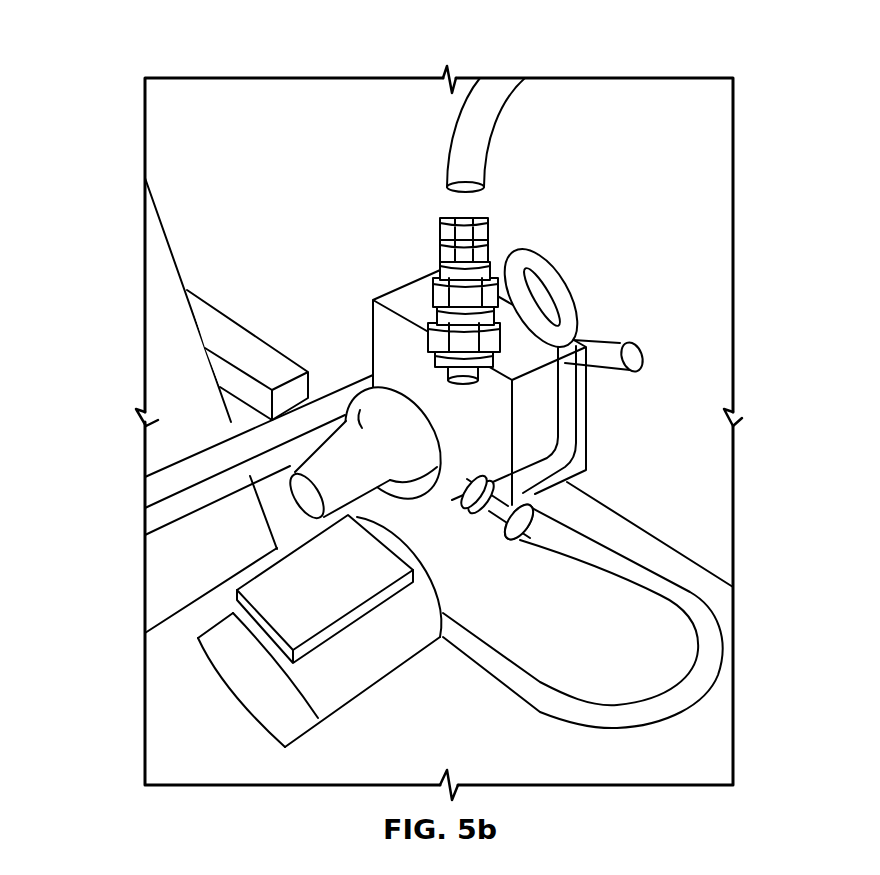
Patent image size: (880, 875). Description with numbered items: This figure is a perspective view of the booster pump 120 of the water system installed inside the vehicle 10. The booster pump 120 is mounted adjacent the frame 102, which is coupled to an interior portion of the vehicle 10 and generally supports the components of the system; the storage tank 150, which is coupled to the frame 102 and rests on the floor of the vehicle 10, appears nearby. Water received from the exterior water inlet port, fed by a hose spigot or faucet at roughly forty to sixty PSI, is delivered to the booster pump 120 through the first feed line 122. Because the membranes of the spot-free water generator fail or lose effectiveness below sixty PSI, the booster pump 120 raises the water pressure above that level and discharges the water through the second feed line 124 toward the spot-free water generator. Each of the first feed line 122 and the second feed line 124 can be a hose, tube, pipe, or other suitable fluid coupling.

The vehicle 10 is at (435, 733).
The frame 102 is at (300, 333).
The booster pump 120 is at (470, 424).
The first feed line 122 is at (567, 294).
The second feed line 124 is at (478, 148).
The storage tank 150 is at (165, 362).